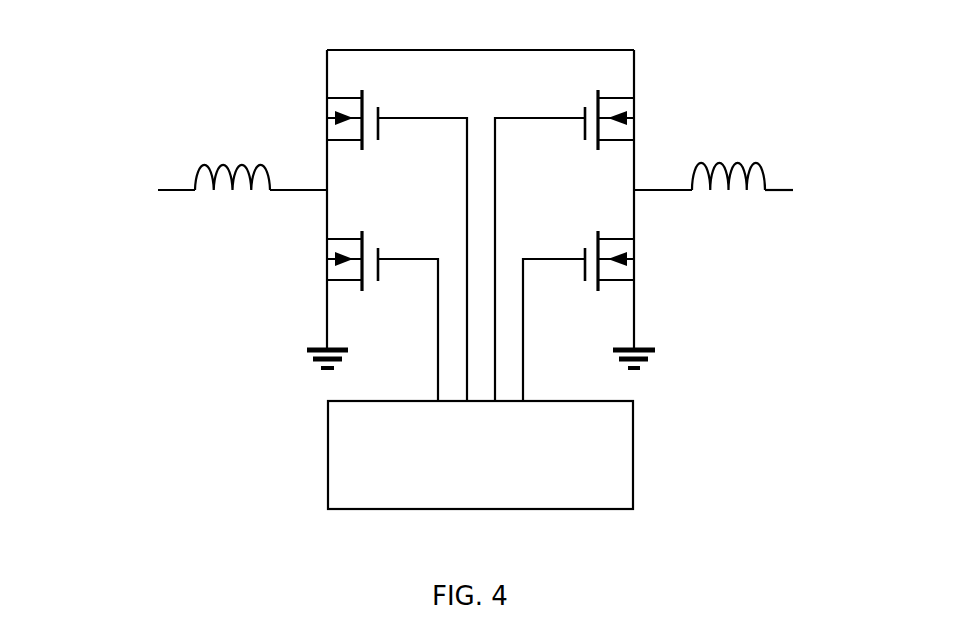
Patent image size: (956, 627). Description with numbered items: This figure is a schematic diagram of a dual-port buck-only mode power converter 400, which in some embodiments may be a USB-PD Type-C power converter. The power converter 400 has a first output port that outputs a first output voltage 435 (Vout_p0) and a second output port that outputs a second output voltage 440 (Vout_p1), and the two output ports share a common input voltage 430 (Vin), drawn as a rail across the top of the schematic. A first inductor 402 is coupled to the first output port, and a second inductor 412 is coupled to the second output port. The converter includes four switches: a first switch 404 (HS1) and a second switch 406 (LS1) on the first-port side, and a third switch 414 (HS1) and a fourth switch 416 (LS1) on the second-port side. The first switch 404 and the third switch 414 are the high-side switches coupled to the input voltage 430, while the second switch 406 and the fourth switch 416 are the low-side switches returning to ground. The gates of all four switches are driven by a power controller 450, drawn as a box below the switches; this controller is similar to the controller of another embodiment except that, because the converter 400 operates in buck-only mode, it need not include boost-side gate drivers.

The power converter 400 is at (79, 66).
The first inductor 402 is at (240, 192).
The first switch 404 is at (378, 107).
The second switch 406 is at (378, 247).
The second inductor 412 is at (716, 192).
The third switch 414 is at (585, 107).
The fourth switch 416 is at (585, 247).
The input voltage 430 is at (522, 49).
The first output voltage 435 is at (158, 192).
The second output voltage 440 is at (776, 192).
The power controller 450 is at (500, 496).